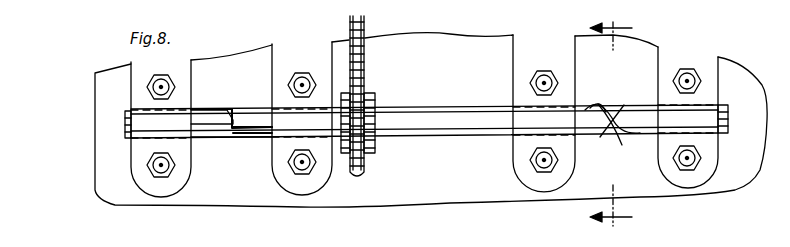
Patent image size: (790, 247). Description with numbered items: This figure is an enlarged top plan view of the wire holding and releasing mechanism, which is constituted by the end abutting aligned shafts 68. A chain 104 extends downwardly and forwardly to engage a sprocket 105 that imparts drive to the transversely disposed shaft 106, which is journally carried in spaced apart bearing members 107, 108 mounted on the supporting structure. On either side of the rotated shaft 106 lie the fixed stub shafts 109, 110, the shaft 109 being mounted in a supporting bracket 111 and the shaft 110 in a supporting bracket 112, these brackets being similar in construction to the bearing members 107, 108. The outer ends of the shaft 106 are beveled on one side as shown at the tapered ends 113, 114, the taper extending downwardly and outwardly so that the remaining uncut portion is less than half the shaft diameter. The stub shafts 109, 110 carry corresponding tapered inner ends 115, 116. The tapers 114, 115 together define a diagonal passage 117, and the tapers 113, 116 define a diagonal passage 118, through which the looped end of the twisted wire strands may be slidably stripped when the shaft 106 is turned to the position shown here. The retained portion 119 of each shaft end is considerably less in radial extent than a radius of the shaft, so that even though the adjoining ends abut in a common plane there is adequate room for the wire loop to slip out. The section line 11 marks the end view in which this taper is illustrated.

The end abutting aligned shafts 68 is at (729, 103).
The chain 104 is at (360, 58).
The sprocket 105 is at (357, 115).
The shaft 106 is at (462, 125).
The bearing member 107 is at (285, 55).
The bearing member 108 is at (532, 46).
The end abutting aligned shaft 109 is at (729, 123).
The end abutting aligned shaft 110 is at (124, 122).
The supporting bracket 111 is at (713, 83).
The supporting bracket 112 is at (133, 90).
The tapered end 113 is at (240, 122).
The tapered end 114 is at (600, 112).
The tapered inner end 115 is at (622, 110).
The tapered inner end 116 is at (210, 138).
The diagonal passage 117 is at (612, 115).
The diagonal passage 118 is at (233, 118).
The retained portion 119 is at (600, 112).
The section line 11 is at (611, 126).